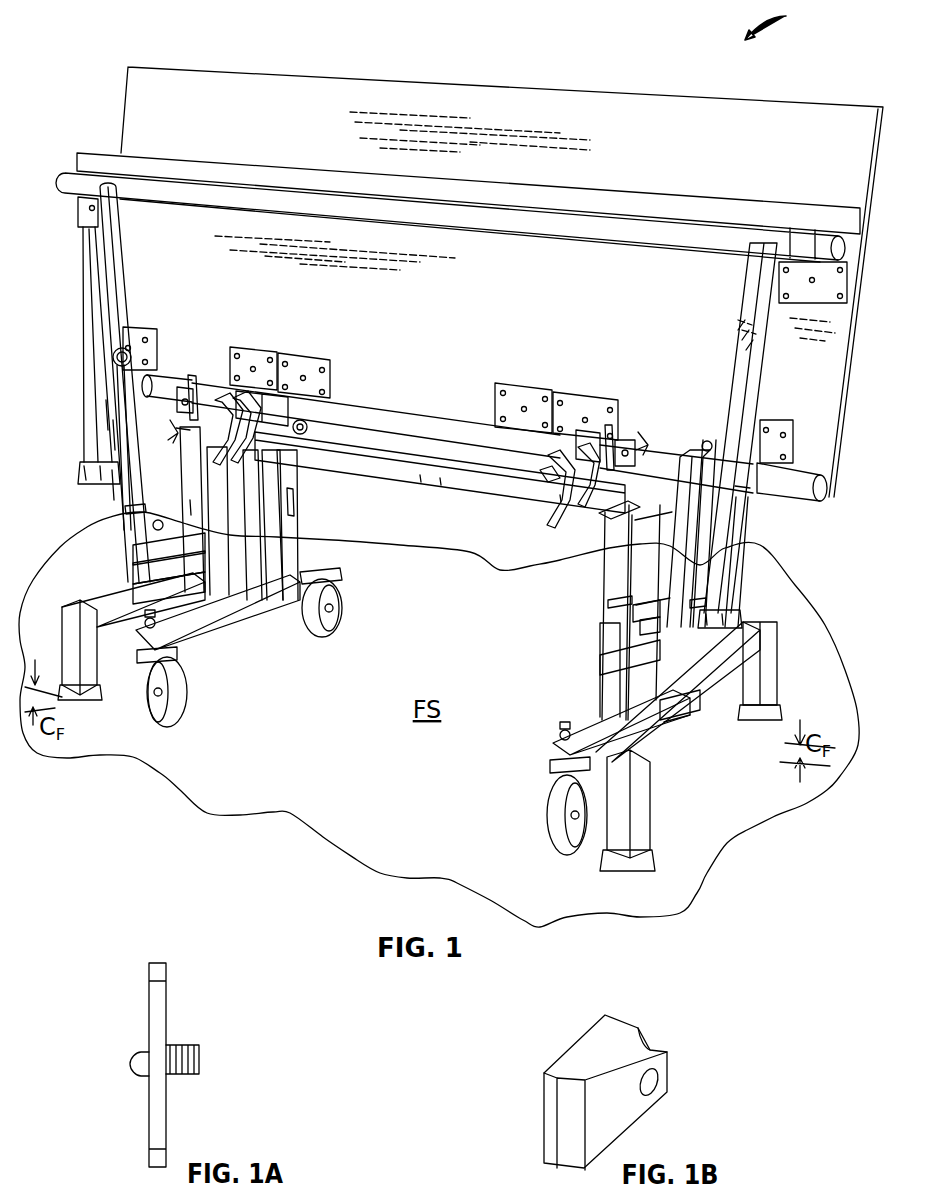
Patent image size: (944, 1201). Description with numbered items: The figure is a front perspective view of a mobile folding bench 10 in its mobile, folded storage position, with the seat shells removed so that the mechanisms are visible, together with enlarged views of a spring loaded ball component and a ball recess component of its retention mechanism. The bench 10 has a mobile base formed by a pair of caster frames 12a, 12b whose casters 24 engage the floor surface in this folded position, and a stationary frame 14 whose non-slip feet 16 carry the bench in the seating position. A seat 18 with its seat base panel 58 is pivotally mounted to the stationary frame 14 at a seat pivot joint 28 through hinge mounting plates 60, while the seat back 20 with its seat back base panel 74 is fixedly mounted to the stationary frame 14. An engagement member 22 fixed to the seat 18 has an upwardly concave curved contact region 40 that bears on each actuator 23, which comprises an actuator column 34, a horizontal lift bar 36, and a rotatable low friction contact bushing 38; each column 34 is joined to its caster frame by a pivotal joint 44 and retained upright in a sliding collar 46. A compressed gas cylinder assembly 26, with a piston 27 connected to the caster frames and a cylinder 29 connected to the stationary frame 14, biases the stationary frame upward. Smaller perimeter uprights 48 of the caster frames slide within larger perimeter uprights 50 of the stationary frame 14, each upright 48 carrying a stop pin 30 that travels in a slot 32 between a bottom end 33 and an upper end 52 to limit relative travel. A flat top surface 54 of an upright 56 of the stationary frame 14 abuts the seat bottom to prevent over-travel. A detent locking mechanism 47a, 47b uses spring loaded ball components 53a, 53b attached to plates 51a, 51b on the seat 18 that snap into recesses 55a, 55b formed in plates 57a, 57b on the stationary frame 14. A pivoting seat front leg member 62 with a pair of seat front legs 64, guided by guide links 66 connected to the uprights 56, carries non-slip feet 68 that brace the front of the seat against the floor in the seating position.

In FIG. 1, the mobile folding bench 10 is at (781, 22).
In FIG. 1, the caster frame 12a is at (560, 740).
In FIG. 1, the caster frame 12b is at (186, 662).
In FIG. 1, the stationary frame 14 is at (92, 602).
In FIG. 1, the non-slip feet 16 is at (94, 700).
In FIG. 1, the seat 18 is at (836, 475).
In FIG. 1, the seat back 20 is at (215, 67).
In FIG. 1, the engagement member 22 is at (217, 395).
In FIG. 1, the actuator 23 is at (286, 595).
In FIG. 1, the caster 24 is at (178, 712).
In FIG. 1, the cylinder assembly 26 is at (218, 610).
In FIG. 1, the piston 27 is at (680, 735).
In FIG. 1, the seat pivot joint 28 is at (148, 386).
In FIG. 1, the cylinder 29 is at (700, 603).
In FIG. 1, the stop pin 30 is at (175, 570).
In FIG. 1, the slot 32 is at (200, 530).
In FIG. 1, the bottom end 33 is at (212, 612).
In FIG. 1, the actuator column 34 is at (300, 528).
In FIG. 1, the lift bar 36 is at (270, 395).
In FIG. 1, the contact bushing 38 is at (296, 395).
In FIG. 1, the curved contact region 40 is at (352, 432).
In FIG. 1, the pivotal joint 44 is at (237, 590).
In FIG. 1, the sliding collar 46 is at (266, 470).
In FIG. 1, the detent locking mechanism 47a is at (172, 436).
In FIG. 1, the detent locking mechanism 47b is at (650, 430).
In FIG. 1, the upright 48 is at (598, 692).
In FIG. 1, the upright 50 is at (600, 648).
In FIG. 1, the plate 51a is at (191, 378).
In FIG. 1A, the plate 51a is at (148, 1132).
In FIG. 1, the plate 51b is at (605, 425).
In FIG. 1, the upper end 52 is at (124, 509).
In FIG. 1A, the spring loaded ball component 53a is at (130, 1062).
In FIG. 1, the spring loaded ball component 53b is at (546, 486).
In FIG. 1, the top surface 54 is at (122, 328).
In FIG. 1, the recess 55a is at (190, 432).
In FIG. 1B, the recess 55a is at (658, 1082).
In FIG. 1, the recess 55b is at (735, 492).
In FIG. 1, the upright 56 is at (708, 702).
In FIG. 1, the plate 57a is at (183, 388).
In FIG. 1B, the plate 57a is at (590, 1034).
In FIG. 1, the plate 57b is at (636, 412).
In FIG. 1, the seat base panel 58 is at (525, 288).
In FIG. 1, the hinge mounting plate 60 is at (145, 328).
In FIG. 1, the seat front leg member 62 is at (118, 172).
In FIG. 1, the seat front leg 64 is at (96, 330).
In FIG. 1, the guide link 66 is at (120, 365).
In FIG. 1, the non-slip feet 68 is at (80, 471).
In FIG. 1, the seat back base panel 74 is at (572, 142).